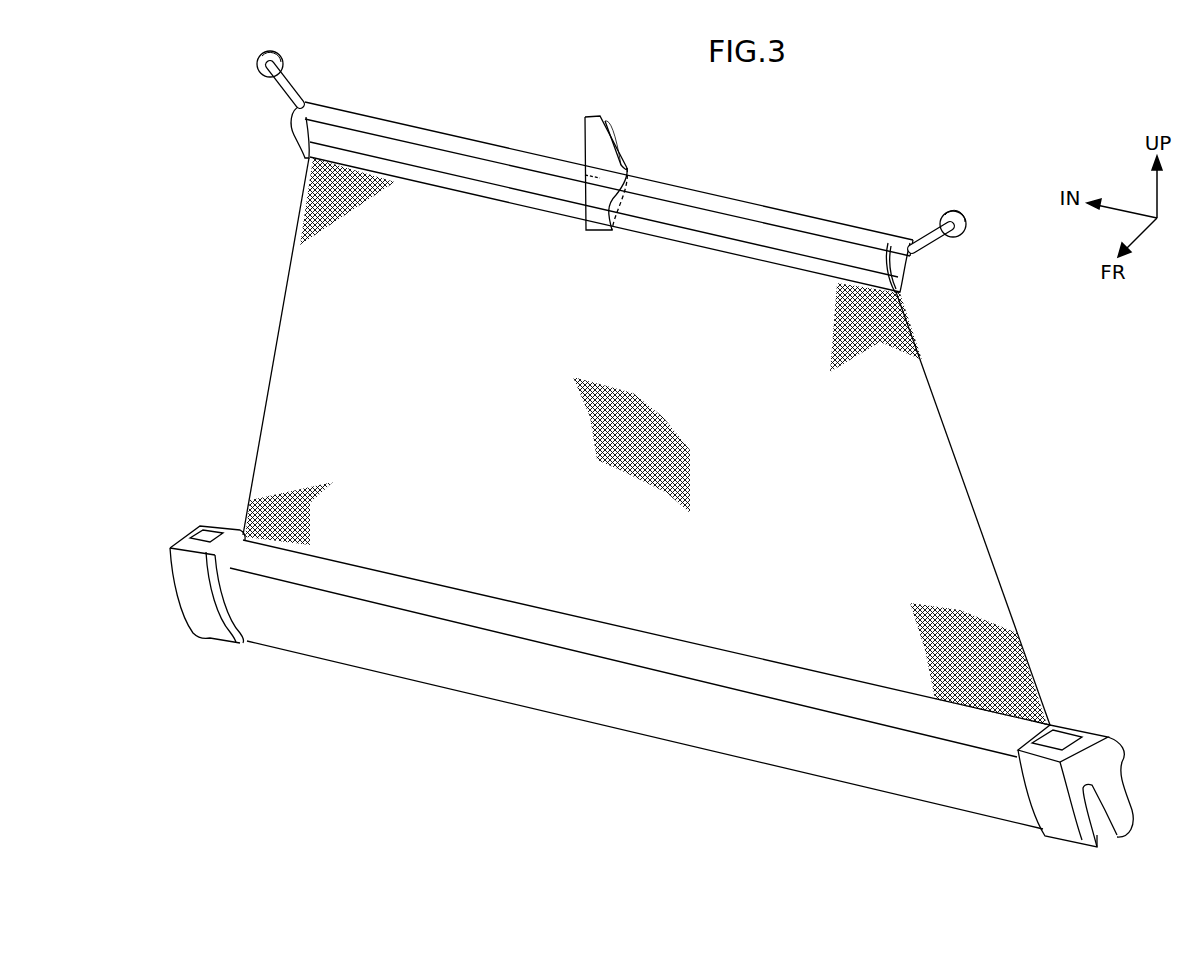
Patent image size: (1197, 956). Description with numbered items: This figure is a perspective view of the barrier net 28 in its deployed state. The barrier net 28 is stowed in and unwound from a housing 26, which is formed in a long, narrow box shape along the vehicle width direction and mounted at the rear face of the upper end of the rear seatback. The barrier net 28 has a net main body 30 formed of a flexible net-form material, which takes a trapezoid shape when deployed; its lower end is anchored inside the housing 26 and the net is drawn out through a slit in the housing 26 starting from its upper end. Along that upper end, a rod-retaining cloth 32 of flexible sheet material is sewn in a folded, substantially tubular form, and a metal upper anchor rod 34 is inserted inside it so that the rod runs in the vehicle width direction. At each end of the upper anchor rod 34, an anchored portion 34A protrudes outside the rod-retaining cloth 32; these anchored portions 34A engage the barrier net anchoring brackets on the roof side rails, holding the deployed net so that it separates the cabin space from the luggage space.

The housing 26 is at (577, 707).
The barrier net 28 is at (1004, 445).
The net main body 30 is at (990, 547).
The rod-retaining cloth 32 is at (720, 200).
The upper anchor rod 34 is at (292, 117).
The anchored portion 34A is at (270, 88).